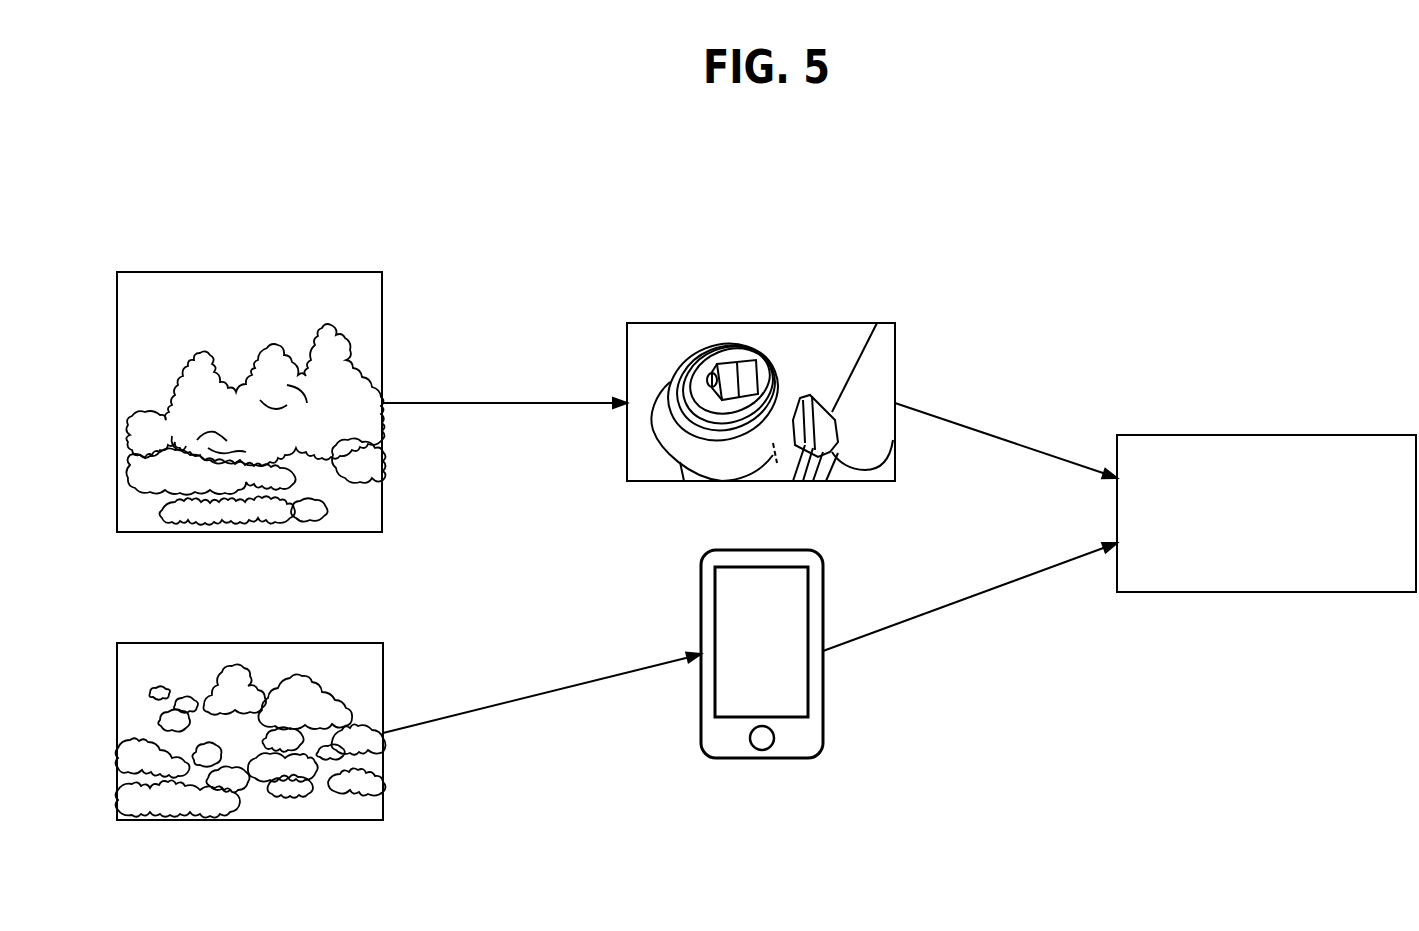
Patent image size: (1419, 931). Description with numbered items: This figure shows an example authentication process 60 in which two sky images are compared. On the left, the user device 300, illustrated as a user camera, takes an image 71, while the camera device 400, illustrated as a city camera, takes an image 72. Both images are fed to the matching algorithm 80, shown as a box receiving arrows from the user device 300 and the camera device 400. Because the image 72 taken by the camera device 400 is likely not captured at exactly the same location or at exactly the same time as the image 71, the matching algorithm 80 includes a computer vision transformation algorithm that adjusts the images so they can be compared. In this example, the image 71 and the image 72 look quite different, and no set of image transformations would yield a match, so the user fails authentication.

The authentication process 60 is at (224, 158).
The image 71 is at (158, 642).
The image 72 is at (158, 271).
The matching algorithm 80 is at (1174, 434).
The user device 300 is at (824, 585).
The camera device 400 is at (896, 348).